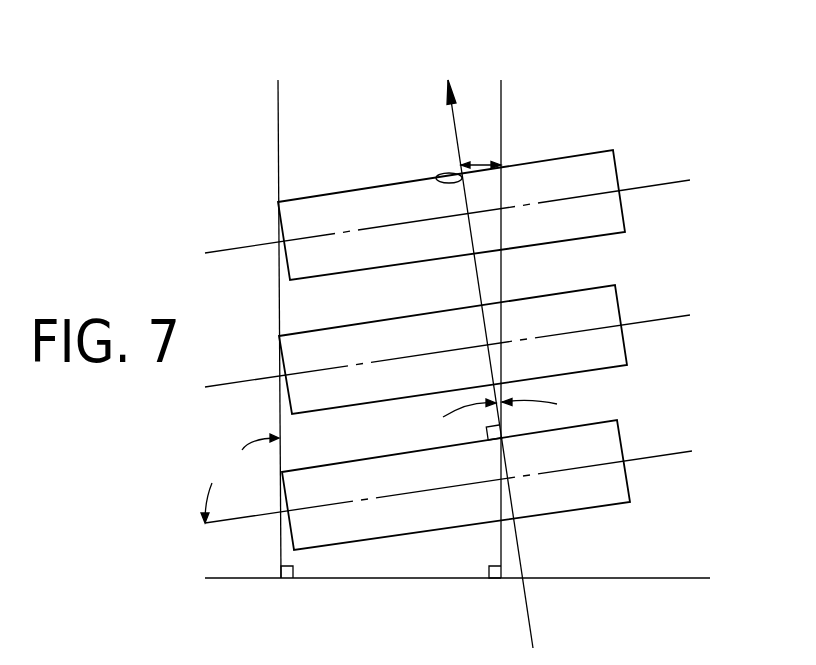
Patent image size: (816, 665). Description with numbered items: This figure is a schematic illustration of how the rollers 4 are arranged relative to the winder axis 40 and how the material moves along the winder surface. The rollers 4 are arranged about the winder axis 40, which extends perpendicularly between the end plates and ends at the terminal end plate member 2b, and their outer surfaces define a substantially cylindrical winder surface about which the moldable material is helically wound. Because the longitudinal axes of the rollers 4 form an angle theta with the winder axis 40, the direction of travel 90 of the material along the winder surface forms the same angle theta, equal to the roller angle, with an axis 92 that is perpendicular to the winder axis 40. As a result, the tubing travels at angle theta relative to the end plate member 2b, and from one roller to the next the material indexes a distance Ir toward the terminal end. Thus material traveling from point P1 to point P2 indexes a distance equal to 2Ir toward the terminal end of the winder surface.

The roller 4 is at (593, 150).
The terminal end plate member 2b is at (280, 548).
The winder axis 40 is at (645, 580).
The direction of travel 90 is at (457, 127).
The axis perpendicular to the winder axis 92 is at (502, 120).
The indexing distance 2Ir is at (485, 165).
The point P1 is at (501, 438).
The point P2 is at (436, 178).